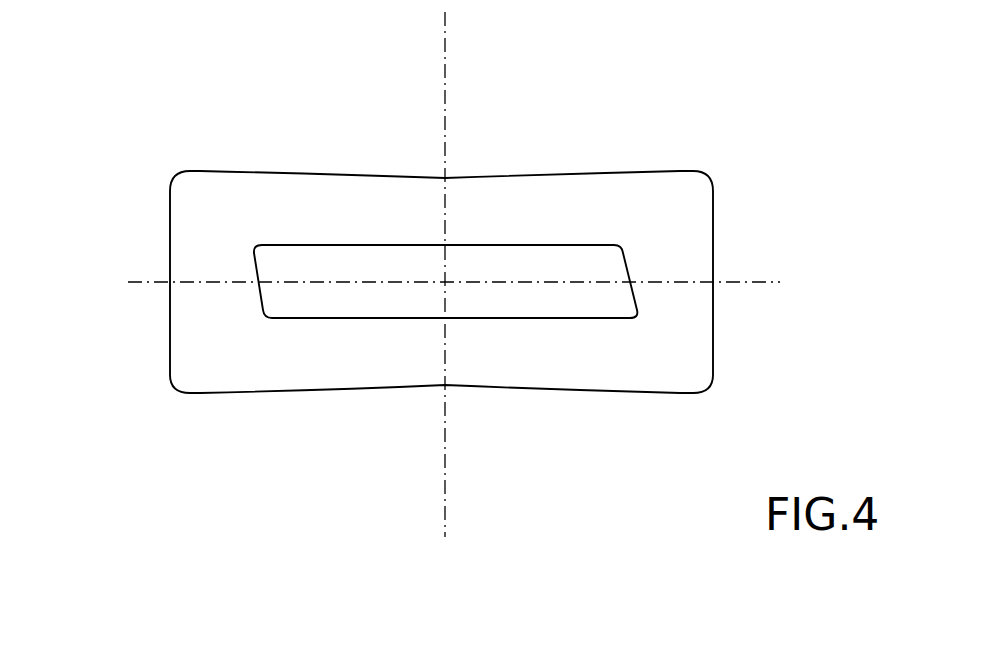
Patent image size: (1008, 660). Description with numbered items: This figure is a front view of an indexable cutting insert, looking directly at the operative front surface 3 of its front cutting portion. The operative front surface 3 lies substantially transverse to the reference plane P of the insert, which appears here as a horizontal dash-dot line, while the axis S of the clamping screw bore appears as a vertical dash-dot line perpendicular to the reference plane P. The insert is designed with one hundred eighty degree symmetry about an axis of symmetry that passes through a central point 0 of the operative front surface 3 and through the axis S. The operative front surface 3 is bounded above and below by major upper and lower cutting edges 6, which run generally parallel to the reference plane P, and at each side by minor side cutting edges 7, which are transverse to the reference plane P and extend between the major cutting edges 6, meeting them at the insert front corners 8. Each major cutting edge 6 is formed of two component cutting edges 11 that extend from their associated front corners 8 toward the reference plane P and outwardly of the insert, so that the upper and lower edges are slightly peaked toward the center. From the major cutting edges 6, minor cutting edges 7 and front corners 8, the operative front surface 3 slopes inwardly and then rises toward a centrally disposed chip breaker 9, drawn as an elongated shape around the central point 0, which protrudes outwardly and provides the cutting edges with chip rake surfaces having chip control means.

The operative front surface 3 is at (242, 223).
The major upper and lower cutting edges 6 is at (348, 172).
The minor side cutting edges 7 is at (170, 307).
The insert front corners 8 is at (180, 175).
The chip breaker 9 is at (560, 274).
The component cutting edges 11 is at (267, 170).
The central point 0 is at (446, 282).
The axis of the clamping screw bore S is at (445, 35).
The reference plane P is at (135, 280).